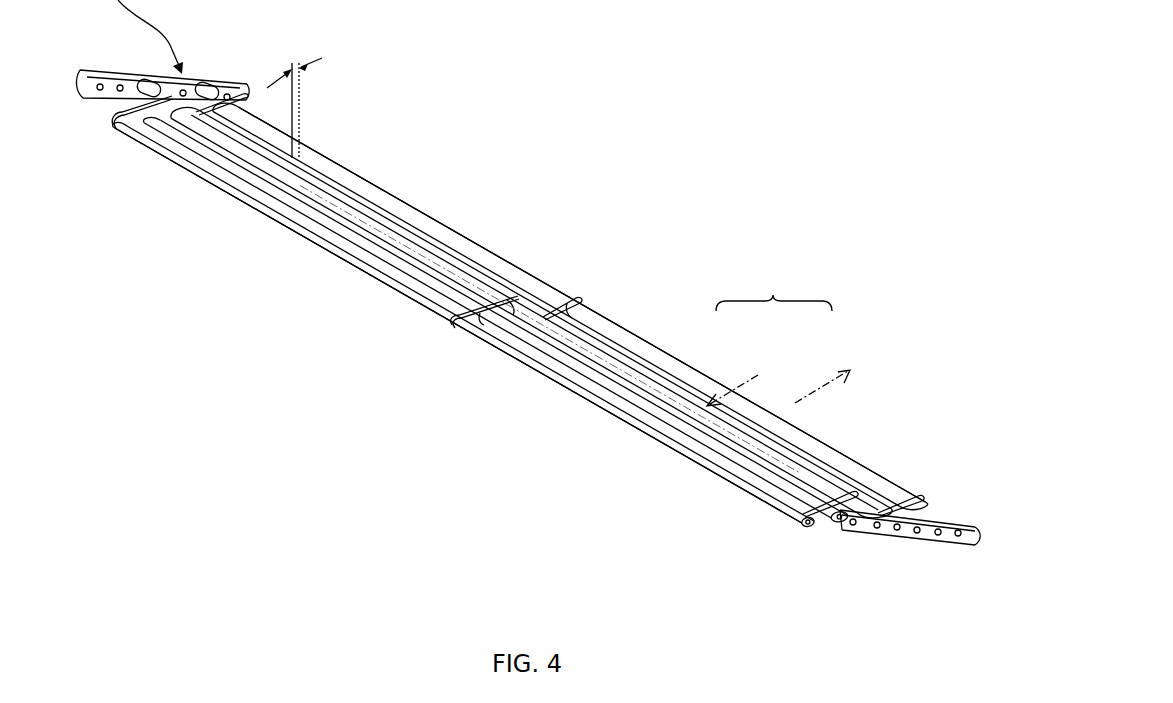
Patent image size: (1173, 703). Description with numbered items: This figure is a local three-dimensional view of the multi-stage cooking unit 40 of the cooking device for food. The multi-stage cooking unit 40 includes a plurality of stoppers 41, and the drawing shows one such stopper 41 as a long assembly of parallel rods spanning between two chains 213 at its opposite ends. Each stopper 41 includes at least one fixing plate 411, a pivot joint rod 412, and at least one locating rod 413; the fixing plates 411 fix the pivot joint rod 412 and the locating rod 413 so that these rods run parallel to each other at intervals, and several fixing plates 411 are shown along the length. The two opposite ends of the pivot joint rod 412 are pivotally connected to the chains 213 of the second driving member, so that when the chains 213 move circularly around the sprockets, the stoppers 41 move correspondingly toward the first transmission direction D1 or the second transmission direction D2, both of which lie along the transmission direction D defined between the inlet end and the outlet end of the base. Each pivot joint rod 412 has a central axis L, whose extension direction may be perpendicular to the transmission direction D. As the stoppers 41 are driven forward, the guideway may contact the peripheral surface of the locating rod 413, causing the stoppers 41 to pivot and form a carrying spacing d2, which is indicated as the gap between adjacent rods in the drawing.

The multi-stage cooking unit 40 is at (649, 267).
The stopper 41 is at (408, 188).
The fixing plate 411 is at (127, 128).
The pivot joint rod 412 is at (330, 168).
The locating rod 413 is at (273, 215).
The chain 213 is at (207, 84).
The central axis L is at (580, 362).
The transmission direction D is at (774, 290).
The first transmission direction D1 is at (742, 387).
The second transmission direction D2 is at (818, 387).
The carrying spacing d2 is at (294, 96).